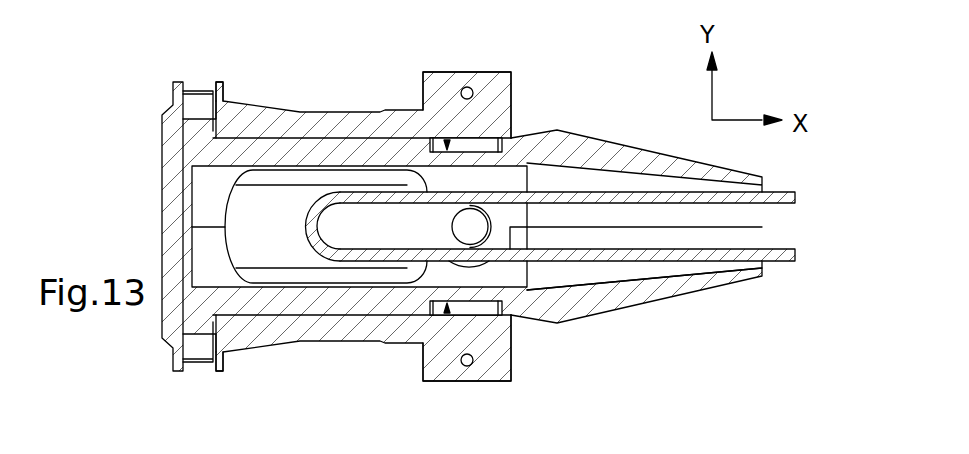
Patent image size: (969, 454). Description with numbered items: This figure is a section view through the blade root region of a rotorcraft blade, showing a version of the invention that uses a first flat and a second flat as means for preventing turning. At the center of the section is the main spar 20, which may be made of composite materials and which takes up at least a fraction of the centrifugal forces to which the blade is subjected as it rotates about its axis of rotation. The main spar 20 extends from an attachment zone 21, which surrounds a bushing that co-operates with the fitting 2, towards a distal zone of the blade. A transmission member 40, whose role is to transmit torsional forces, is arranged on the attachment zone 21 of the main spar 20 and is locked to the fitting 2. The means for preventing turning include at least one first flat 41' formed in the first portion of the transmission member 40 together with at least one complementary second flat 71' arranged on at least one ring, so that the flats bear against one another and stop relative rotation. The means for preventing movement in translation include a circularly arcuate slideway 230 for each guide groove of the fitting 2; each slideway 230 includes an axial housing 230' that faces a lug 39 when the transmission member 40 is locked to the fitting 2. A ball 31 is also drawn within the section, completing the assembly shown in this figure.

The fitting 2 is at (362, 120).
The main spar 20 is at (783, 192).
The attachment zone 21 is at (657, 268).
The ball 31 is at (470, 228).
The lug 39 is at (195, 128).
The transmission member 40 is at (582, 305).
The seal 41' is at (503, 232).
The second flat 71' is at (446, 220).
The circularly arcuate slideway 230 is at (185, 188).
The axial housing 230' is at (246, 196).